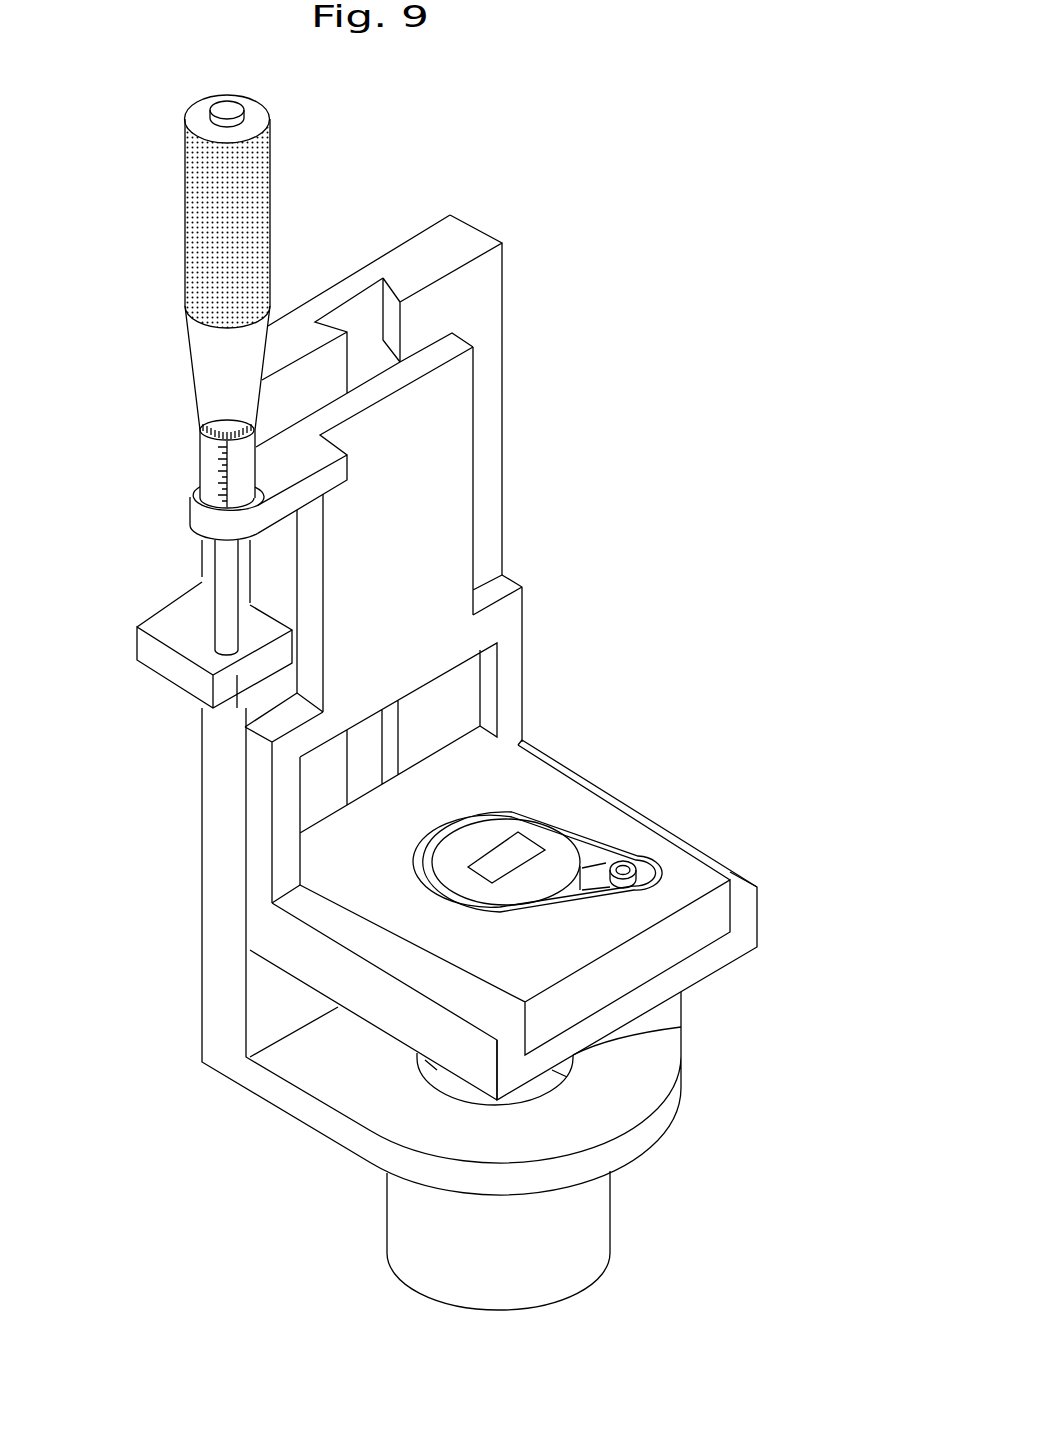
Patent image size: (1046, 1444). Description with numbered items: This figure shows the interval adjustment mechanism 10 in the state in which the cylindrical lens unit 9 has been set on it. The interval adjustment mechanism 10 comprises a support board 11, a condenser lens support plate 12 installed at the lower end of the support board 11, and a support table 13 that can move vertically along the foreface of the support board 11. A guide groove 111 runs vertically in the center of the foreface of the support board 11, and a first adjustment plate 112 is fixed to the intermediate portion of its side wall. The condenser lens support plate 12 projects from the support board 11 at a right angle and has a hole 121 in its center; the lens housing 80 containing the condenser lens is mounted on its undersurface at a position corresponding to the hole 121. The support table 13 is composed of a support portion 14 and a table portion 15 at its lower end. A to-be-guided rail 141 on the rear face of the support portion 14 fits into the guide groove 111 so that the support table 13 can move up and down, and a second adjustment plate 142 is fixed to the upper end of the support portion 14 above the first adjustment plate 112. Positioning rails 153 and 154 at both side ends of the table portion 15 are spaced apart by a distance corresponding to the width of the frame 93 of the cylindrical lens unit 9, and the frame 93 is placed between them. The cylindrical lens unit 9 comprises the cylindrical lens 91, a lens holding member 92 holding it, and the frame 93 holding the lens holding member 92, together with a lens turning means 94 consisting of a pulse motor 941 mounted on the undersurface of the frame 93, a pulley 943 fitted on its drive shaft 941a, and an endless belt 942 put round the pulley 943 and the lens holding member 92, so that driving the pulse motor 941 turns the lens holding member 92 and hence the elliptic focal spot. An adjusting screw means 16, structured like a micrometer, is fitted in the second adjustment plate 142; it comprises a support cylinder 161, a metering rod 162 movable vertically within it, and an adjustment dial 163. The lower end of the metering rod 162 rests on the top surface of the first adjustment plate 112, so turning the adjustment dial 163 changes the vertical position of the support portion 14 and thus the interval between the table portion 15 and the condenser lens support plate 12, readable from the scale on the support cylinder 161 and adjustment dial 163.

The cylindrical lens unit 9 is at (662, 750).
The interval adjustment mechanism 10 is at (383, 172).
The support board 11 is at (473, 226).
The condenser lens support plate 12 is at (291, 1120).
The support table 13 is at (647, 535).
The support portion 14 is at (476, 440).
The table portion 15 is at (657, 814).
The adjusting screw means 16 is at (182, 333).
The lens housing 80 is at (613, 1225).
The cylindrical lens 91 is at (498, 852).
The lens holding member 92 is at (456, 852).
The frame 93 is at (542, 752).
The lens turning means 94 is at (688, 995).
The guide groove 111 is at (385, 330).
The first adjustment plate 112 is at (152, 627).
The hole 121 is at (577, 1085).
The to-be-guided rail 141 is at (360, 355).
The second adjustment plate 142 is at (195, 520).
The positioning rail 153 is at (743, 886).
The positioning rail 154 is at (355, 940).
The support cylinder 161 is at (222, 465).
The metering rod 162 is at (225, 600).
The adjustment dial 163 is at (190, 200).
The pulse motor 941 is at (672, 1008).
The drive shaft 941a is at (624, 870).
The endless belt 942 is at (591, 841).
The pulley 943 is at (640, 868).